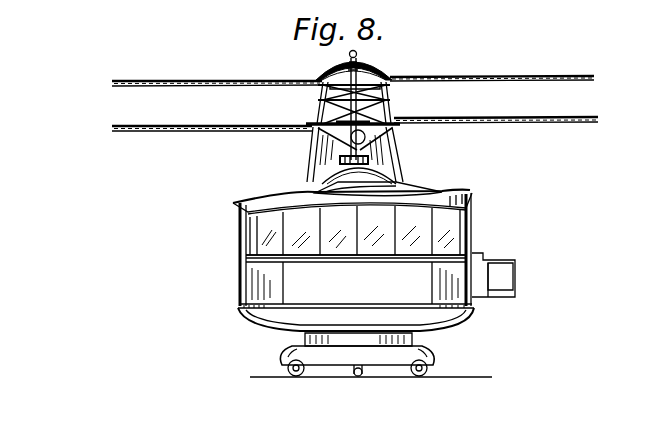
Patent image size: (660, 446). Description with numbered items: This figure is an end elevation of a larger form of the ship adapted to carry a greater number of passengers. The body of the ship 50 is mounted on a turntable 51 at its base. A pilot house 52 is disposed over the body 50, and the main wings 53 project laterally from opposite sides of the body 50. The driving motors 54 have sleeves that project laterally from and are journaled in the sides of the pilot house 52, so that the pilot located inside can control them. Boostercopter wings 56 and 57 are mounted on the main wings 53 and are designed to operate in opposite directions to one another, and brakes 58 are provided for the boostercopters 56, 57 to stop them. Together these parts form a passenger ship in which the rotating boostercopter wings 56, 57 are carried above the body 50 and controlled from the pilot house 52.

The body of the ship 50 is at (238, 286).
The turntable 51 is at (430, 350).
The pilot house 52 is at (358, 63).
The main wings 53 is at (405, 183).
The driving motors 54 is at (393, 133).
The boostercopter wing 56 is at (313, 116).
The boostercopter wing 57 is at (330, 64).
The brakes 58 is at (340, 160).